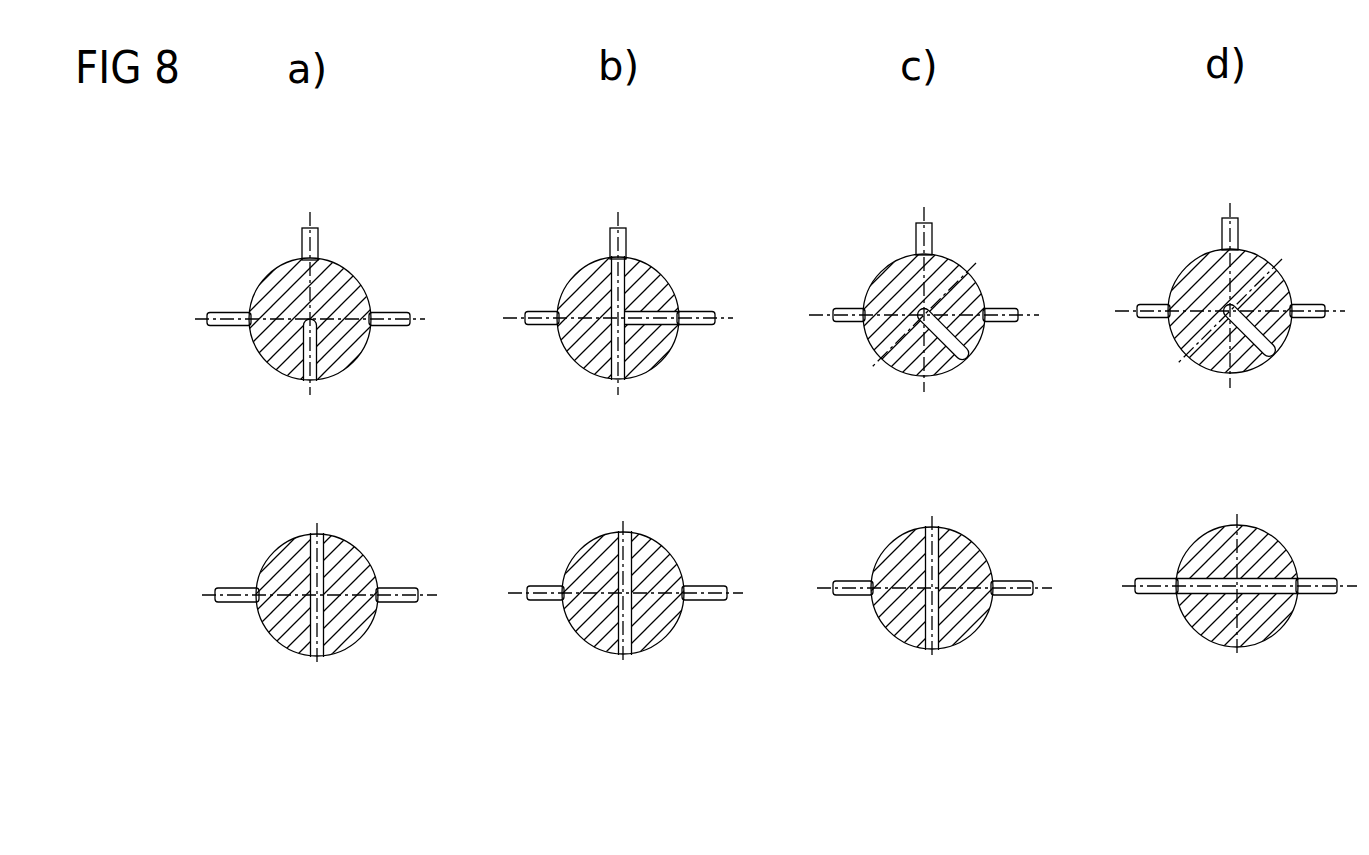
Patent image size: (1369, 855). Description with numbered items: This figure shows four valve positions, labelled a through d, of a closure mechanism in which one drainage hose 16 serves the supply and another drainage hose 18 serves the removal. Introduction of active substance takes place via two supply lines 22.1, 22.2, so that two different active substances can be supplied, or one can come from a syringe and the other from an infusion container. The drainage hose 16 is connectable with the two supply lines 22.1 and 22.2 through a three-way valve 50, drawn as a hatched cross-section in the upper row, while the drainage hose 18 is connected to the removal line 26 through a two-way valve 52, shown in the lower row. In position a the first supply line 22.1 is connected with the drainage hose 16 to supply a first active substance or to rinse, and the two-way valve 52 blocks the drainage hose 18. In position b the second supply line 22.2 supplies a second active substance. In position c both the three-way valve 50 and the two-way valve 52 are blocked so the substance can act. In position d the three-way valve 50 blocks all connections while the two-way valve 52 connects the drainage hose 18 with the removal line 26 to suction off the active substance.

The drainage hose 16 is at (1318, 303).
The drainage hose 18 is at (1327, 720).
The first supply line 22.1 is at (1142, 305).
The second supply line 22.2 is at (1226, 240).
The removal line 26 is at (1151, 723).
The three-way valve 50 is at (1218, 420).
The two-way valve 52 is at (1223, 723).